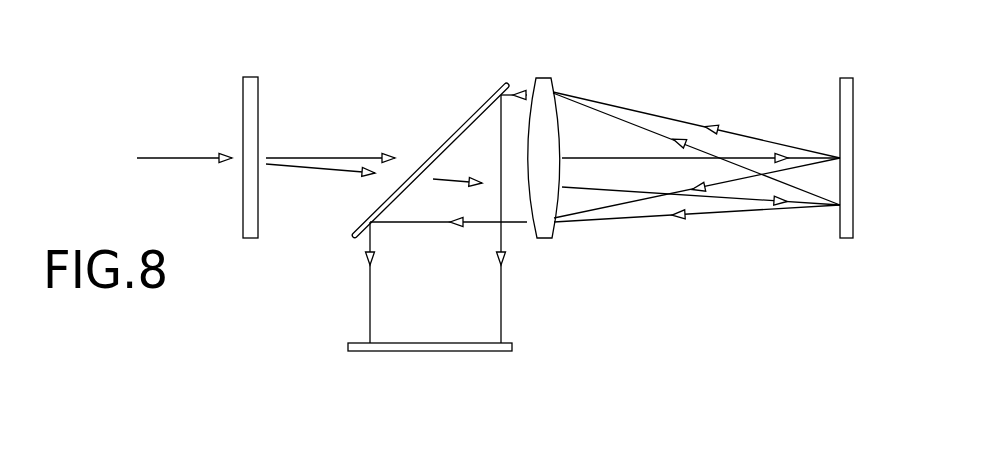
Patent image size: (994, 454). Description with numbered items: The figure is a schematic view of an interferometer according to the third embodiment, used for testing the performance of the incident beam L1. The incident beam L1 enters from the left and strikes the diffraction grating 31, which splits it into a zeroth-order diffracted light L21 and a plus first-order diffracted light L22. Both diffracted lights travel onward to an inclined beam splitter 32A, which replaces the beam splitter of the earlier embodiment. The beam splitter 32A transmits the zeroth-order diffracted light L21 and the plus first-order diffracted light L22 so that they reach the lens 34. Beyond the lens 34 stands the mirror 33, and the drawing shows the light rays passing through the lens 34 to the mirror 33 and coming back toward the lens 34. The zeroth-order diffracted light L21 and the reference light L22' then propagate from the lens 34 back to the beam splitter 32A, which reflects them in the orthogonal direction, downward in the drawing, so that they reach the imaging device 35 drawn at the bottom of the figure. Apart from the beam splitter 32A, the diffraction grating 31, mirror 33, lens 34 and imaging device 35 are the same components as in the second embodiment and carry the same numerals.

The diffraction grating 31 is at (250, 77).
The beam splitter 32A is at (507, 80).
The mirror 33 is at (847, 78).
The lens 34 is at (547, 239).
The imaging device 35 is at (512, 347).
The incident beam L1 is at (184, 144).
The zeroth-order diffracted light L21 is at (553, 155).
The plus first-order diffracted light L22 is at (553, 151).
The reference light L22' is at (697, 230).